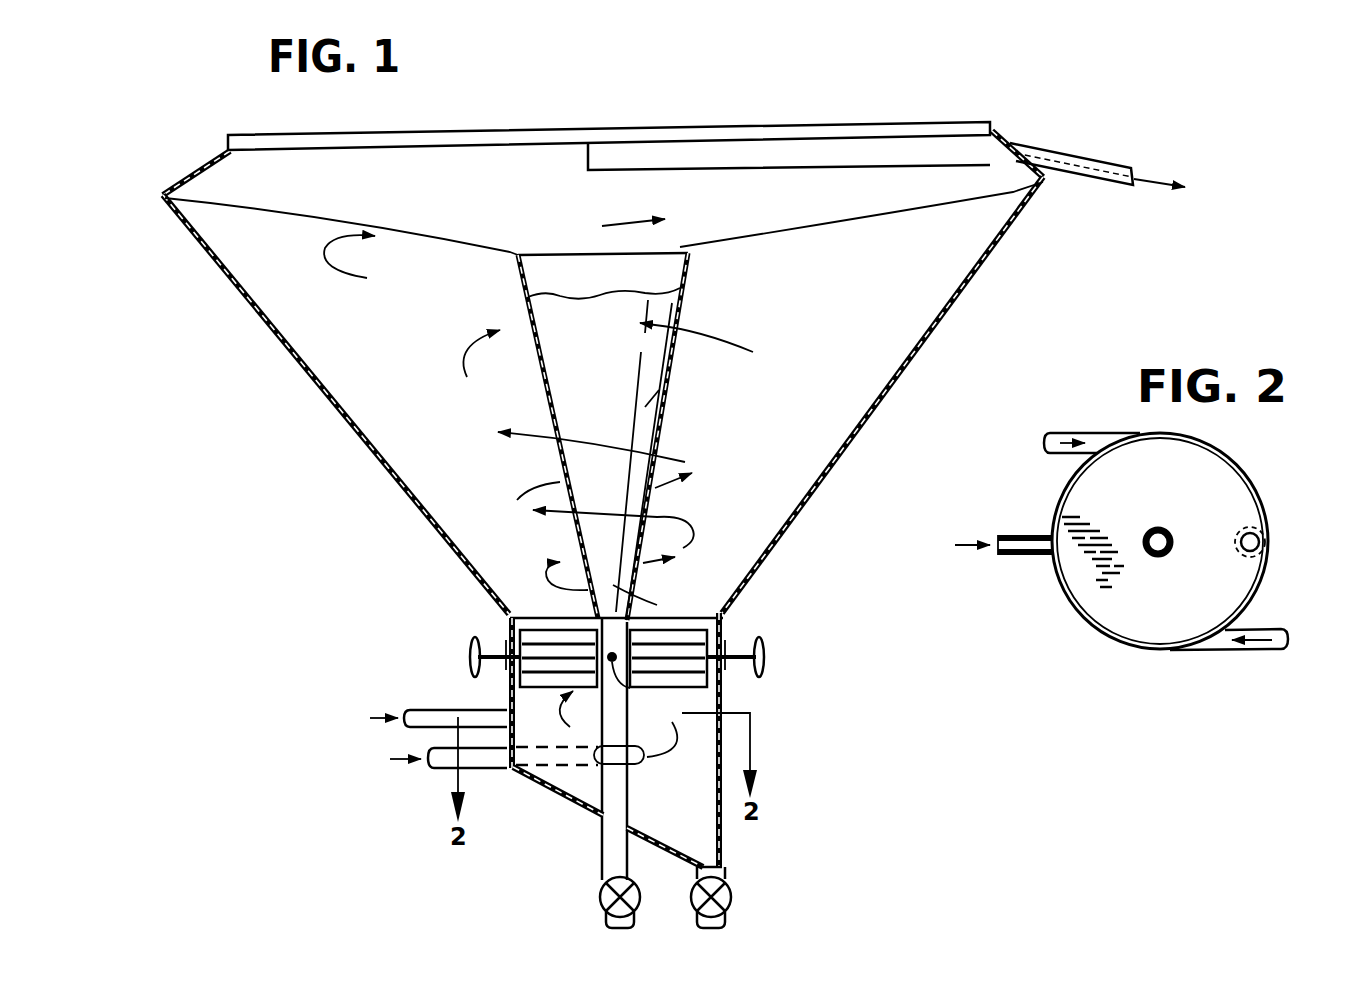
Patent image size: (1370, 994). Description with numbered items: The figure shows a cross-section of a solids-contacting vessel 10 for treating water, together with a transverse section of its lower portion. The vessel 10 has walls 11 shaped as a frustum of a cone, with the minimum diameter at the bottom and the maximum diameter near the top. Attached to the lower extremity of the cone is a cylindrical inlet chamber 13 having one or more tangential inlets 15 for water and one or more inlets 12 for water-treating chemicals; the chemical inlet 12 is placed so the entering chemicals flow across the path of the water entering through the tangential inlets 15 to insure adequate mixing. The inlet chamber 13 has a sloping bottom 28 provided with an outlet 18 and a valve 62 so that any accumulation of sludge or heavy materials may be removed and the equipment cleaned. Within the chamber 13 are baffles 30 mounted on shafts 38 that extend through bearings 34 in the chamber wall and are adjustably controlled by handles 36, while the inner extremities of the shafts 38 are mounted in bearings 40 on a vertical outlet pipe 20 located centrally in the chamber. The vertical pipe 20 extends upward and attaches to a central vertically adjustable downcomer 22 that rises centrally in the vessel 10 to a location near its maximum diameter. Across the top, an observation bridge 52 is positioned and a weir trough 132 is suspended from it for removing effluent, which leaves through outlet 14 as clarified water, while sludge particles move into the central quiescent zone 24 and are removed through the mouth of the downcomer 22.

In FIG. 1, the vessel 10 is at (402, 533).
In FIG. 1, the walls 11 is at (961, 297).
In FIG. 1, the observation bridge 52 is at (517, 131).
In FIG. 1, the weir trough 132 is at (775, 137).
In FIG. 1, the outlet 14 is at (1096, 158).
In FIG. 1, the central quiescent zone 24 is at (678, 257).
In FIG. 1, the central vertically adjustable downcomer 22 is at (688, 291).
In FIG. 1, the vertical outlet pipe 20 is at (602, 856).
In FIG. 2, the vertical outlet pipe 20 is at (1162, 557).
In FIG. 1, the cylindrical inlet chamber 13 is at (498, 688).
In FIG. 2, the cylindrical inlet chamber 13 is at (1137, 656).
In FIG. 1, the sloping bottom 28 is at (550, 792).
In FIG. 2, the sloping bottom 28 is at (1110, 613).
In FIG. 1, the baffles 30 is at (554, 628).
In FIG. 1, the bearings 34 is at (502, 645).
In FIG. 1, the handles 36 is at (466, 646).
In FIG. 1, the shafts 38 is at (472, 668).
In FIG. 1, the bearings 40 is at (616, 723).
In FIG. 1, the chemical inlet 12 is at (427, 708).
In FIG. 2, the chemical inlet 12 is at (1010, 560).
In FIG. 1, the tangential inlets 15 is at (437, 770).
In FIG. 2, the tangential inlets 15 is at (1062, 455).
In FIG. 1, the valve 62 is at (731, 893).
In FIG. 1, the outlet 18 is at (733, 916).
In FIG. 2, the outlet 18 is at (1263, 532).